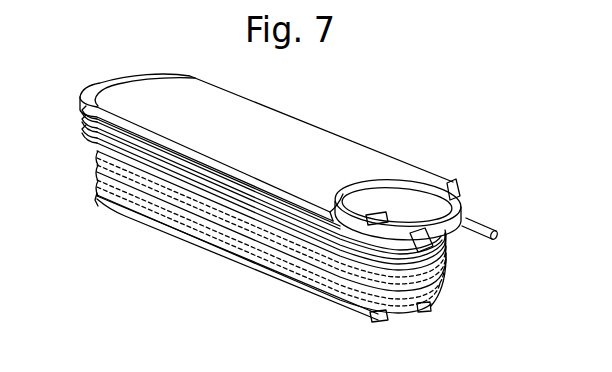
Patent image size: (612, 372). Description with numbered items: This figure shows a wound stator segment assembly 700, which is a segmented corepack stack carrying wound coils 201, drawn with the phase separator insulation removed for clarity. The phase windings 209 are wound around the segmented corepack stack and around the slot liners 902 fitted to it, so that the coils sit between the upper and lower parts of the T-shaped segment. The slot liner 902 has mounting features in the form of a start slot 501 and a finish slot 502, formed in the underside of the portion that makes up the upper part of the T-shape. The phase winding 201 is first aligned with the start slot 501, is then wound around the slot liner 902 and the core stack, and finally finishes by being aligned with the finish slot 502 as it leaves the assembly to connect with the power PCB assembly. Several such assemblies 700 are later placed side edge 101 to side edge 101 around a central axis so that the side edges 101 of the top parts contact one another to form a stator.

The wound stator segment assembly 700 is at (64, 67).
The slot liner 902 is at (84, 92).
The phase winding 209 is at (171, 198).
The side edge 101 is at (258, 190).
The start slot 501 is at (467, 203).
The phase winding 201 is at (480, 227).
The finish slot 502 is at (399, 240).